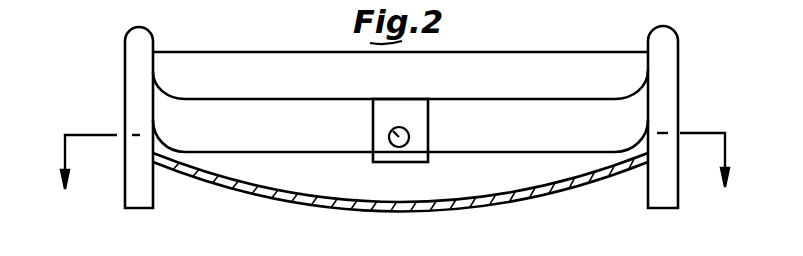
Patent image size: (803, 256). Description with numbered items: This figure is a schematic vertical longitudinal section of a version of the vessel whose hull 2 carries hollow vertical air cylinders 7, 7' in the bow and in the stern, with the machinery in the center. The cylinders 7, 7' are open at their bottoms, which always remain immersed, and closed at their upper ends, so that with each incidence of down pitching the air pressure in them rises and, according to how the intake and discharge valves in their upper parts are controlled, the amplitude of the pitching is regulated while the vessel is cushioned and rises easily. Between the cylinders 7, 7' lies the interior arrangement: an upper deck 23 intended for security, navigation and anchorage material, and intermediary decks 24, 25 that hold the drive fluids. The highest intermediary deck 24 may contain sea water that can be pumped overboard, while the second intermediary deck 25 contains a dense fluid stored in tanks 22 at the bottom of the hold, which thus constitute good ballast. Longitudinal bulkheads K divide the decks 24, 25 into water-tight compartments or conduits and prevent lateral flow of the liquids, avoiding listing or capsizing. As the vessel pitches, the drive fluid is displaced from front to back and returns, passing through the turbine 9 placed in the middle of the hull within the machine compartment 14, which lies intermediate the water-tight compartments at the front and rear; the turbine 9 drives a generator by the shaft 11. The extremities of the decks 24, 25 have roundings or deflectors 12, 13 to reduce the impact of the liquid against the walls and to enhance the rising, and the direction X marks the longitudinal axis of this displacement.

The leaf spring strip 2 is at (548, 195).
The hollow vertical air cylinder 7 is at (118, 117).
The hollow vertical air cylinder 7' is at (684, 117).
The turbine 9 is at (393, 145).
The shaft 11 is at (403, 146).
The rounding or deflector 12 is at (172, 143).
The rounding or deflector 13 is at (638, 137).
The machine compartment 14 is at (428, 126).
The tank 22 is at (293, 182).
The upper deck 23 is at (308, 50).
The intermediary deck 24 is at (312, 97).
The intermediary deck 25 is at (298, 151).
The longitudinal bulkhead K is at (231, 121).
The X direction axis X is at (395, 161).